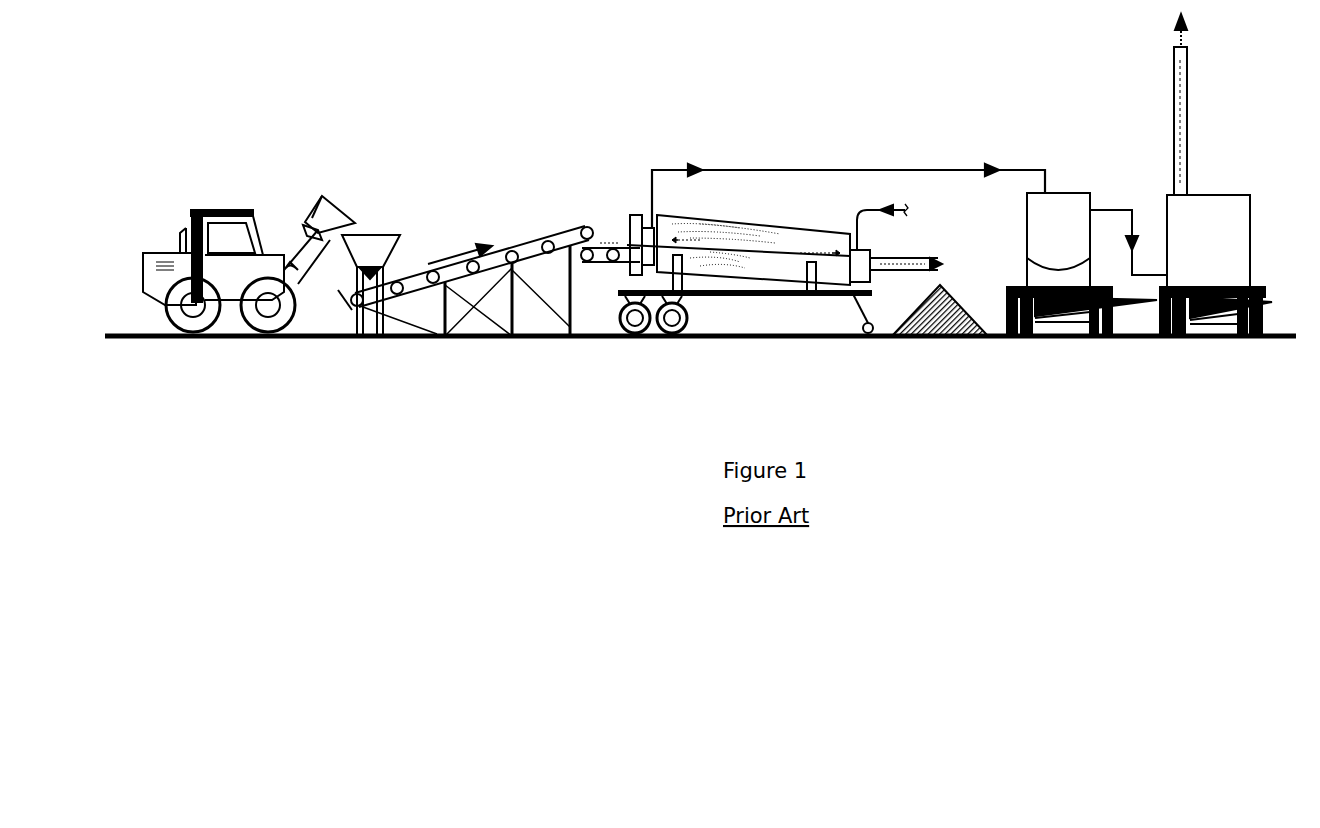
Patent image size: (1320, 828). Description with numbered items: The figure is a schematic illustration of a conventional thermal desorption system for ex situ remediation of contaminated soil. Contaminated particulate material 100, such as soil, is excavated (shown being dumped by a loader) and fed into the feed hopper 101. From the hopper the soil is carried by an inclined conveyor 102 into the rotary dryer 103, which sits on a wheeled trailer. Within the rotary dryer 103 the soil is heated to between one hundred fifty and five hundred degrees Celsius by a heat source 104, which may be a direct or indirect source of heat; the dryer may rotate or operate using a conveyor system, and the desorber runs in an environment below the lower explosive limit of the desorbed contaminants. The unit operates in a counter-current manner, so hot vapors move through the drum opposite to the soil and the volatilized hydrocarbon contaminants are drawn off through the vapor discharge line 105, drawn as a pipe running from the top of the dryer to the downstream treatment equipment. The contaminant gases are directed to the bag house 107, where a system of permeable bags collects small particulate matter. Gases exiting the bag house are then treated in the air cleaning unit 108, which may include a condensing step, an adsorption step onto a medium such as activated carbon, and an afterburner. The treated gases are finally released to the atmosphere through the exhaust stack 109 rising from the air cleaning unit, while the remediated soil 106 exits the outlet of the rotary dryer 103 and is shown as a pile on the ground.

The contaminated particulate material 100 is at (355, 205).
The feed hopper 101 is at (407, 230).
The conveyor 102 is at (553, 227).
The rotary dryer 103 is at (715, 303).
The heat source 104 is at (904, 224).
The vapor discharge line 105 is at (848, 184).
The remediated soil 106 is at (930, 343).
The bag house 107 is at (1062, 348).
The air cleaning unit 108 is at (1205, 330).
The exhaust stack 109 is at (1203, 104).